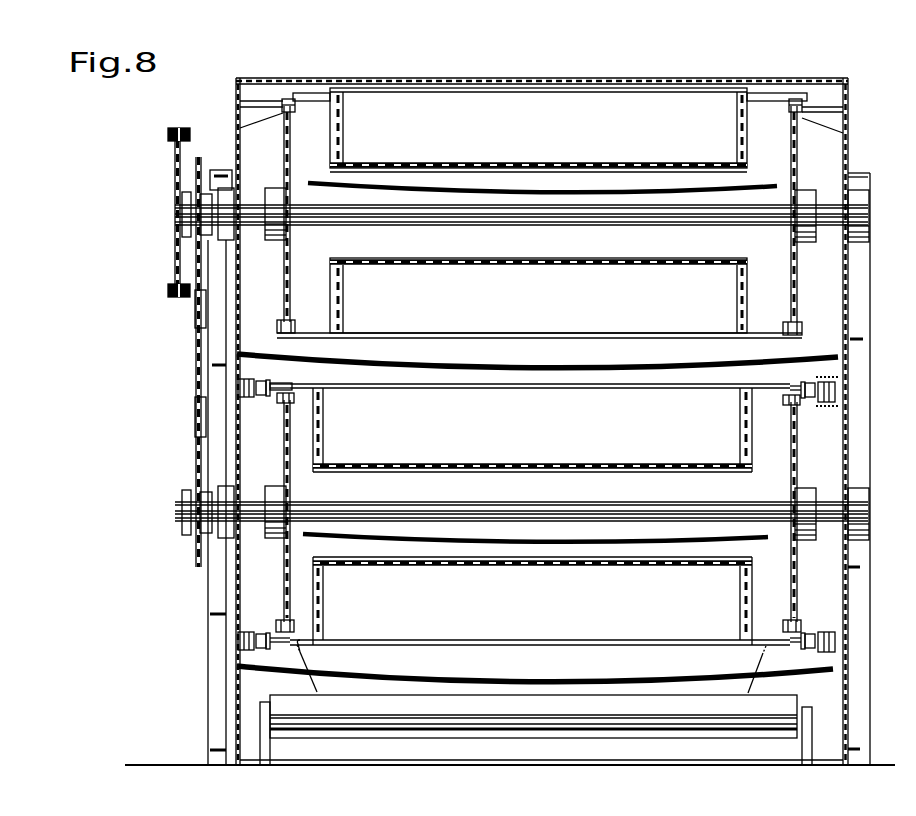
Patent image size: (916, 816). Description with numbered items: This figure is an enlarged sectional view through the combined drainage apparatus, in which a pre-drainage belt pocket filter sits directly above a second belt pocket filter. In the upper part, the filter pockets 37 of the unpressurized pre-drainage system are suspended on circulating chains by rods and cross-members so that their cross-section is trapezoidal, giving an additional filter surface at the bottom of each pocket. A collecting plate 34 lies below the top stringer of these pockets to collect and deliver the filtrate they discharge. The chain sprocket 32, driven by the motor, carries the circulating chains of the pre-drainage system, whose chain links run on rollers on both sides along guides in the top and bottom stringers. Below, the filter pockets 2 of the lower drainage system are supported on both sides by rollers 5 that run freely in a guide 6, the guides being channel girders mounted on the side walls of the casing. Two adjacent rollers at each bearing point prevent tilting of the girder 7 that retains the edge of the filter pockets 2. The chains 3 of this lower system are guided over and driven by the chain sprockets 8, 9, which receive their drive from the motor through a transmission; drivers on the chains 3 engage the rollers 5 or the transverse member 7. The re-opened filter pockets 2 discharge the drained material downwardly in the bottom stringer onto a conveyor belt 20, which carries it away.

The filter pockets 2 is at (548, 441).
The chains 3 is at (283, 99).
The rollers 5 is at (266, 381).
The guide 6 is at (240, 390).
The girder 7 is at (283, 386).
The chain sprocket 8 is at (284, 580).
The chain sprocket 9 is at (791, 478).
The conveyor belt 20 is at (592, 732).
The chain sprocket 32 is at (299, 163).
The collecting plate 34 is at (610, 186).
The filter pockets 37 is at (413, 107).